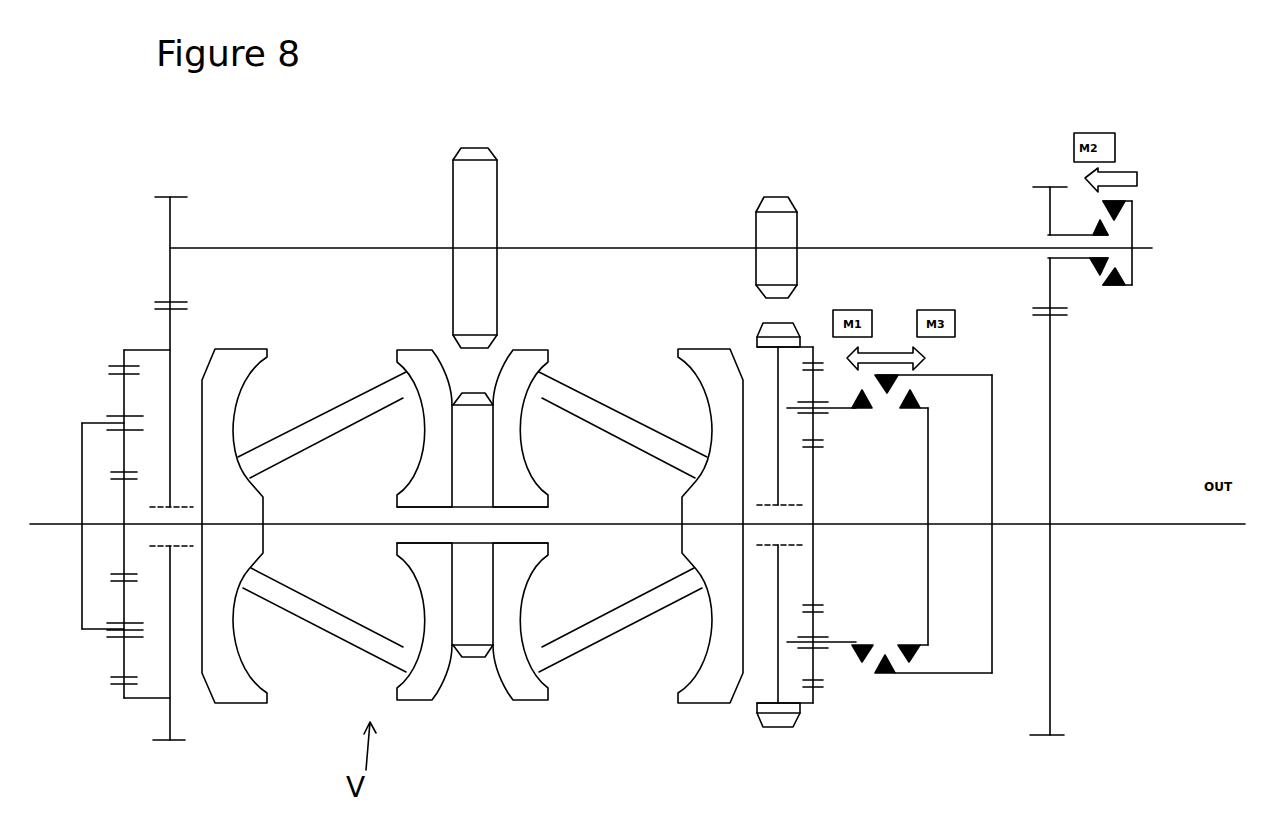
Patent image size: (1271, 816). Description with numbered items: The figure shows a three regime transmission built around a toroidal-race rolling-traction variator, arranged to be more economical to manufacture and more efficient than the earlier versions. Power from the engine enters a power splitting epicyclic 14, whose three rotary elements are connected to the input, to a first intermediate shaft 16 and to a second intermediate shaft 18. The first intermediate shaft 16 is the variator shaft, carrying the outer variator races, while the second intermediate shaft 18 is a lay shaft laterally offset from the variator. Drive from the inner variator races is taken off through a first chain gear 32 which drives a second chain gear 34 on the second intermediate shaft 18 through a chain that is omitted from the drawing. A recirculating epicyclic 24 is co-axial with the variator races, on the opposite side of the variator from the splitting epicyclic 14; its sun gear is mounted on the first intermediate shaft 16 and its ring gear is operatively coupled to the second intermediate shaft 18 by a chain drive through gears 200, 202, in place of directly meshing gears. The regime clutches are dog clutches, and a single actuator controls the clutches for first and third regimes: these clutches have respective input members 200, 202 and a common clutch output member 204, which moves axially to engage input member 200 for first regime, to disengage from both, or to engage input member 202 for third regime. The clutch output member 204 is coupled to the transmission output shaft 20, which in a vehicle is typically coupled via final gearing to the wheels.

The splitting epicyclic 14 is at (95, 704).
The first intermediate shaft 16 is at (583, 521).
The second intermediate shaft 18 is at (606, 247).
The output shaft 20 is at (1094, 527).
The recirculating epicyclic 24 is at (821, 729).
The first chain gear 32 is at (479, 389).
The second chain gear 34 is at (497, 283).
The gear / input member 200 is at (757, 337).
The gear / input member 202 is at (797, 230).
The clutch output member 204 is at (893, 386).